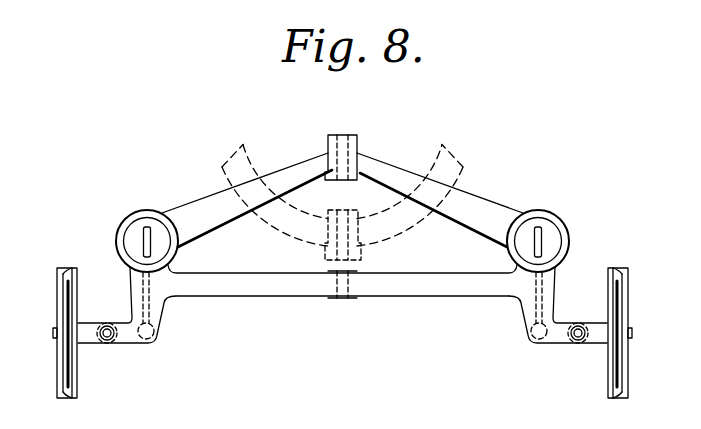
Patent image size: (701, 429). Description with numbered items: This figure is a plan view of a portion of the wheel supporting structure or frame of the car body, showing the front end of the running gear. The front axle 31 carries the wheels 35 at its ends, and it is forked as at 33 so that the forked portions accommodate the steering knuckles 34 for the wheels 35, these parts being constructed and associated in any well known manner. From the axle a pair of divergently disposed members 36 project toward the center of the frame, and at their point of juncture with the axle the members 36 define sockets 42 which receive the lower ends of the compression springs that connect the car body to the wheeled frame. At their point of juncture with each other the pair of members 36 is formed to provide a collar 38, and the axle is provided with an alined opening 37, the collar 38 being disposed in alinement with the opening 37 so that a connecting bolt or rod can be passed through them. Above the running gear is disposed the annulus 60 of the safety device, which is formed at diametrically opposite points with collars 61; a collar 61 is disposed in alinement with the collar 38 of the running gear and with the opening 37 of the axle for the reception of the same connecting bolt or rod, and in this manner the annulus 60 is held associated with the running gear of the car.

The front axle 31 is at (53, 331).
The fork 33 is at (127, 336).
The steering knuckle 34 is at (83, 325).
The wheel 35 is at (62, 290).
The divergently disposed member 36 is at (210, 206).
The opening 37 is at (357, 143).
The collar 38 is at (329, 140).
The socket 42 is at (142, 222).
The annulus 60 is at (462, 168).
The collar 61 is at (362, 251).